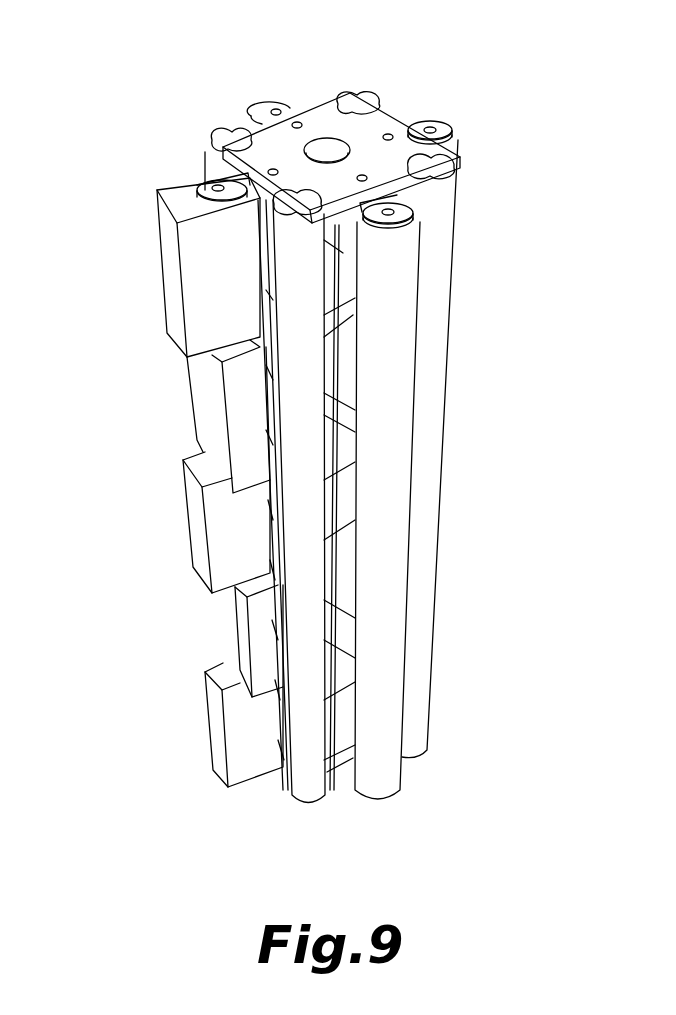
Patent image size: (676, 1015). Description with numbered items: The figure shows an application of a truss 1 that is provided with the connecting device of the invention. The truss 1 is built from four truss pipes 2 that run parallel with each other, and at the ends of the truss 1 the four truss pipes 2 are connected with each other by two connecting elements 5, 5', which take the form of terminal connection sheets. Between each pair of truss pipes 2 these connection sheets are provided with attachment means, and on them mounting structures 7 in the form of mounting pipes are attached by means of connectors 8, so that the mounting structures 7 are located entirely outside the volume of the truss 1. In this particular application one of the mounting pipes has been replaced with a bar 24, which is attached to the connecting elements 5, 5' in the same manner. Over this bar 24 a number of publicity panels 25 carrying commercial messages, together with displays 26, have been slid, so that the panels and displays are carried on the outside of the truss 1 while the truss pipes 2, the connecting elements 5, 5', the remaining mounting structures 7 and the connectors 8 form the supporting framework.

The truss 1 is at (443, 66).
The truss pipes 2 is at (368, 102).
The connecting element 5 is at (335, 151).
The connecting element 5' is at (317, 528).
The mounting structures 7 is at (217, 137).
The connectors 8 is at (267, 110).
The bar 24 is at (166, 212).
The publicity panels 25 is at (197, 277).
The displays 26 is at (198, 395).